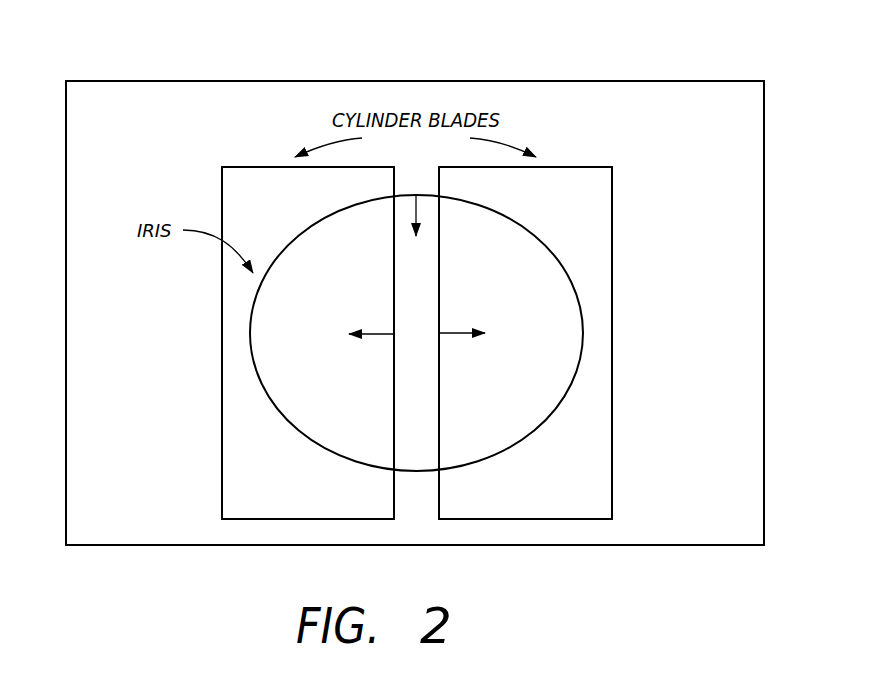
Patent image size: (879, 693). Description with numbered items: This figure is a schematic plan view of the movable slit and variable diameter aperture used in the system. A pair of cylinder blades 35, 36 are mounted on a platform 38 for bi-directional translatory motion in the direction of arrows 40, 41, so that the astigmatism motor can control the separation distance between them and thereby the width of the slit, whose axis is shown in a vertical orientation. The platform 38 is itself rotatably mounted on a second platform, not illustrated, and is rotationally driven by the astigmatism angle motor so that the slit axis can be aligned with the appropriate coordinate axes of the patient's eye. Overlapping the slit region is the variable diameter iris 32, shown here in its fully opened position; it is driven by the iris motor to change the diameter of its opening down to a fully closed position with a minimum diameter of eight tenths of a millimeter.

The platform 38 is at (726, 107).
The cylinder blade 35 is at (268, 492).
The cylinder blade 36 is at (497, 440).
The iris 32 is at (417, 430).
The arrow 40 is at (377, 333).
The arrow 41 is at (455, 333).